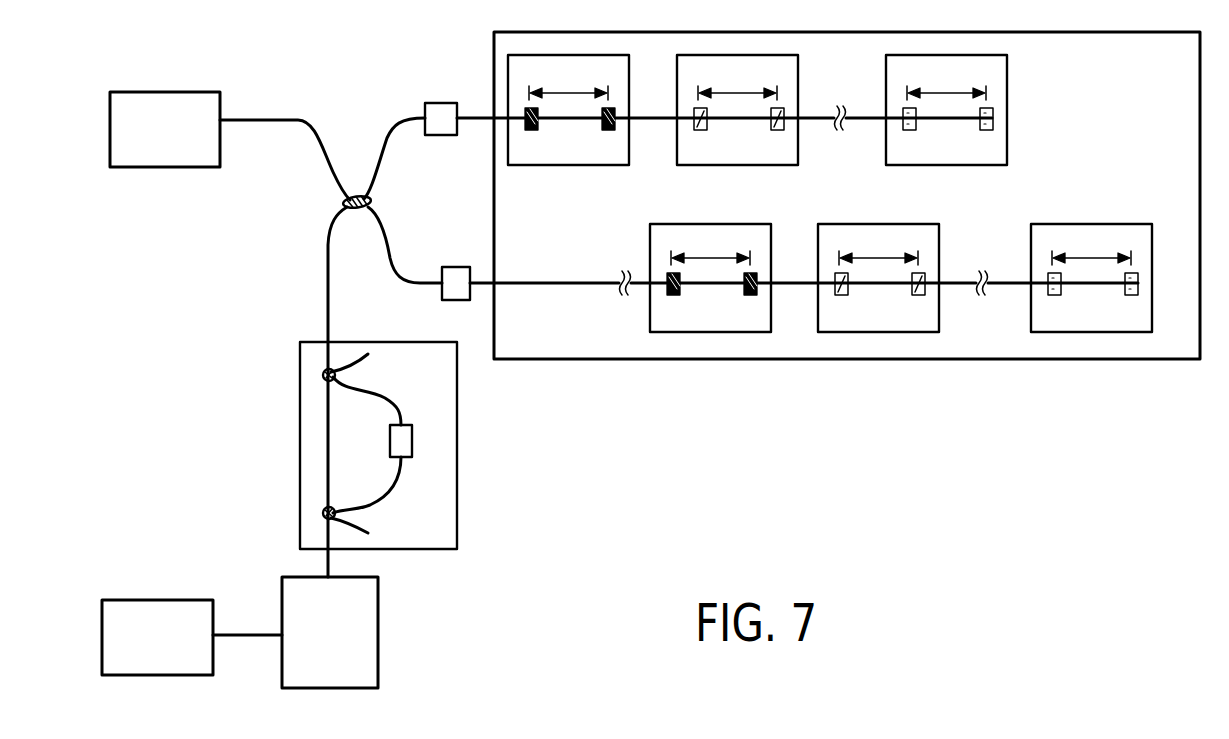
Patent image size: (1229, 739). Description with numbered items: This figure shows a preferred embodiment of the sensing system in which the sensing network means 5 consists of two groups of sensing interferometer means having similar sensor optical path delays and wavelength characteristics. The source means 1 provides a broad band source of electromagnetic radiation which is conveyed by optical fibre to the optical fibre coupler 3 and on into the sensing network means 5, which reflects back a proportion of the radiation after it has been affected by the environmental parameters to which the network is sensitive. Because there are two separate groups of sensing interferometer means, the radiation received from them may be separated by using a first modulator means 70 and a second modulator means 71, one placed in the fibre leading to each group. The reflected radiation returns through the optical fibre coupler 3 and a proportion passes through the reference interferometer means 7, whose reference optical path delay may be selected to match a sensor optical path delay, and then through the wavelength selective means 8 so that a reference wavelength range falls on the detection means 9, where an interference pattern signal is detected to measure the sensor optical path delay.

The source means 1 is at (157, 92).
The optical fibre coupler 3 is at (355, 192).
The sensing network means 5 is at (925, 360).
The reference interferometer means 7 is at (457, 493).
The wavelength selective means 8 is at (378, 631).
The detection means 9 is at (152, 600).
The first modulator means 70 is at (437, 103).
The second modulator means 71 is at (453, 267).